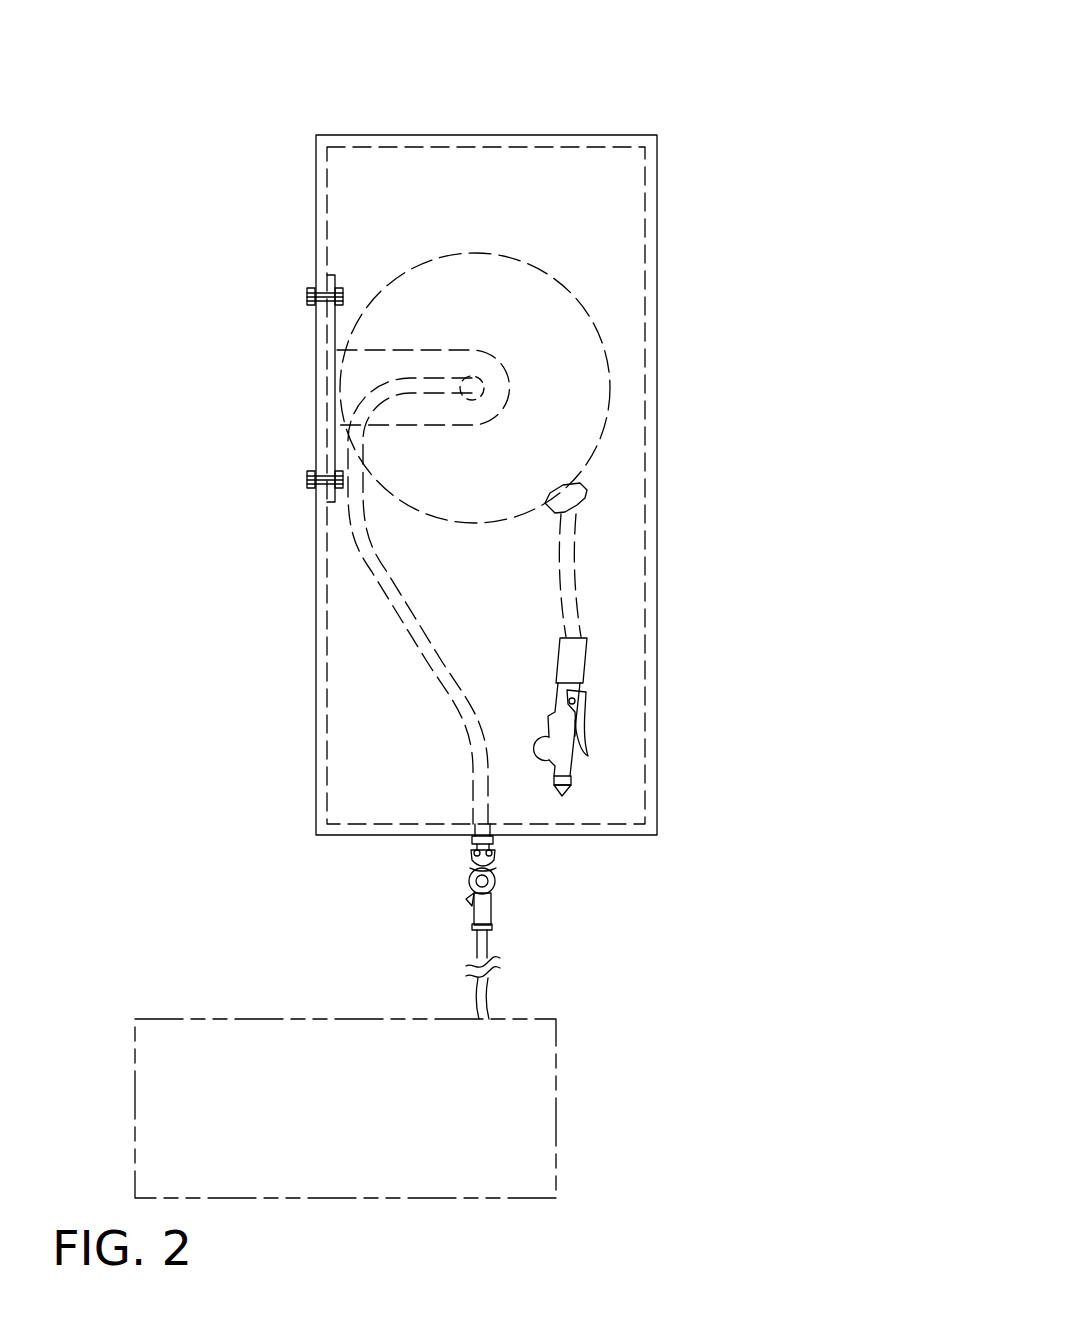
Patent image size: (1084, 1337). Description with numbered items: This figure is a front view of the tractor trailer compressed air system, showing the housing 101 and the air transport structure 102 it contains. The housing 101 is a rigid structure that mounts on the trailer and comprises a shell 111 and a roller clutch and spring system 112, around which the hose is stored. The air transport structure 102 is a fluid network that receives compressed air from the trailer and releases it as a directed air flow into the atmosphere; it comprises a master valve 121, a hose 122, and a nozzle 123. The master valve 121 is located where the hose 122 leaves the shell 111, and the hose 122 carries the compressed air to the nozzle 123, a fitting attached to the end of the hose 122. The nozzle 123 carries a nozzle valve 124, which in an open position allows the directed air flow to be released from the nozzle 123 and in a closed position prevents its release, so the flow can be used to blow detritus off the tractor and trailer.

The housing 101 is at (880, 78).
The shell 111 is at (580, 135).
The roller clutch and spring system 112 is at (580, 375).
The air transport structure 102 is at (890, 218).
The master valve 121 is at (493, 893).
The hose 122 is at (553, 552).
The nozzle 123 is at (568, 788).
The nozzle valve 124 is at (585, 735).